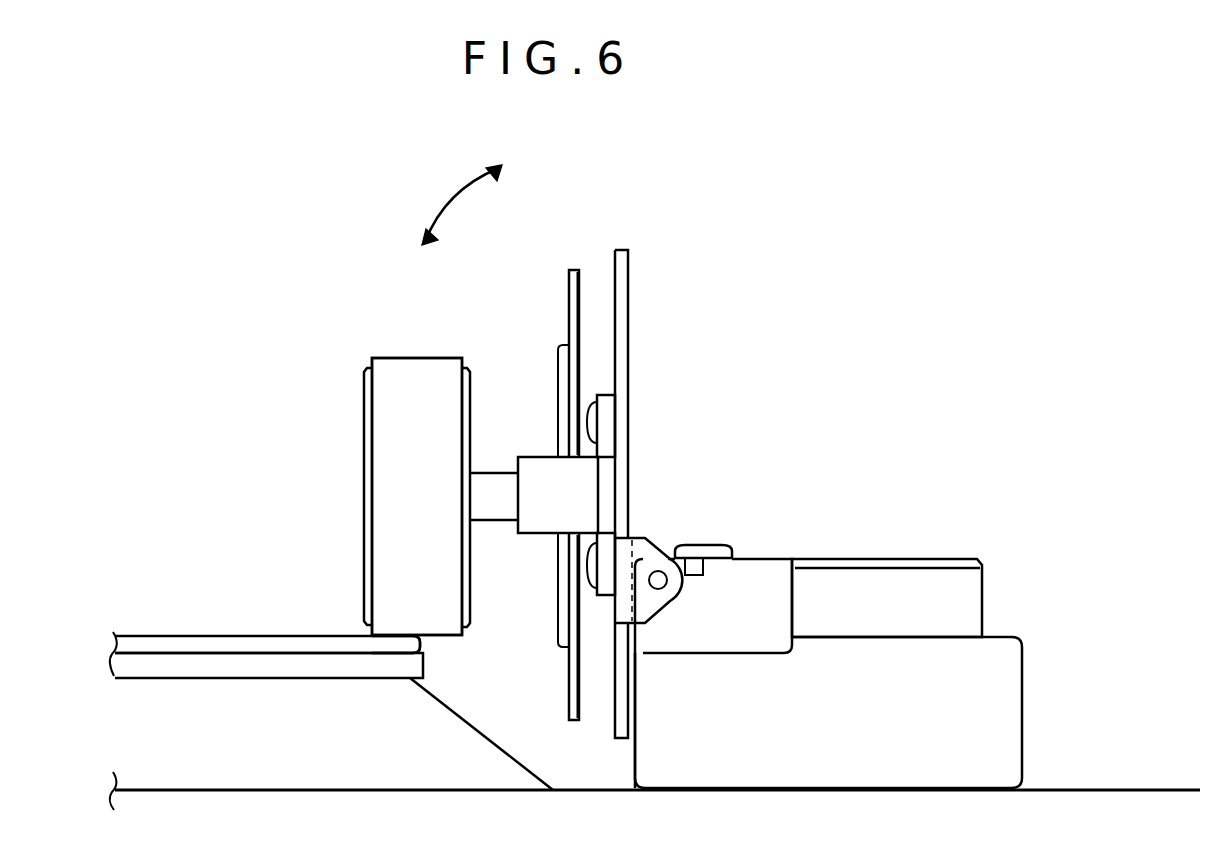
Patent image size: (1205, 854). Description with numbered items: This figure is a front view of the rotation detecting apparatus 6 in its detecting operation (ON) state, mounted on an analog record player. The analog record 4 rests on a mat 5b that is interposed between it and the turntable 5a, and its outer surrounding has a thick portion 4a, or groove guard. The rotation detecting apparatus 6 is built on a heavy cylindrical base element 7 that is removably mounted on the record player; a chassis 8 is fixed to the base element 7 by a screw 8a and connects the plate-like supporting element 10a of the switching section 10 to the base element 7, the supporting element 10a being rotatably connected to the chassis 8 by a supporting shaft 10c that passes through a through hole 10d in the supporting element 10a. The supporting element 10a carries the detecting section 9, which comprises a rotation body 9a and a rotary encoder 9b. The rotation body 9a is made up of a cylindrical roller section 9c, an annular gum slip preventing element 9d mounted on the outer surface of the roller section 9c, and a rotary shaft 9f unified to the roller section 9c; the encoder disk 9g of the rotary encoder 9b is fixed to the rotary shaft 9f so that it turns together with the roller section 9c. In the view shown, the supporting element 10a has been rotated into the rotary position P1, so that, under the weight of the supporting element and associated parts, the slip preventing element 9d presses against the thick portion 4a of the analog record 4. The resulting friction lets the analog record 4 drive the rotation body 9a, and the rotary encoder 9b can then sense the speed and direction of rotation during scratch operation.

The analog record 4 is at (225, 636).
The thick portion 4a is at (392, 643).
The turntable 5a is at (473, 733).
The mat 5b is at (423, 665).
The rotation detecting apparatus 6 is at (791, 444).
The base element 7 is at (1015, 712).
The chassis 8 is at (888, 559).
The screw 8a is at (708, 544).
The detecting section 9 is at (486, 256).
The rotation body 9a is at (338, 489).
The rotary encoder 9b is at (584, 245).
The roller section 9c is at (473, 390).
The slip preventing element 9d is at (395, 365).
The rotary shaft 9f is at (500, 473).
The encoder disk 9g is at (570, 292).
The switching section 10 is at (656, 461).
The supporting element 10a is at (628, 285).
The supporting shaft 10c is at (664, 588).
The through hole 10d is at (654, 573).
The rotary position P1 is at (454, 336).